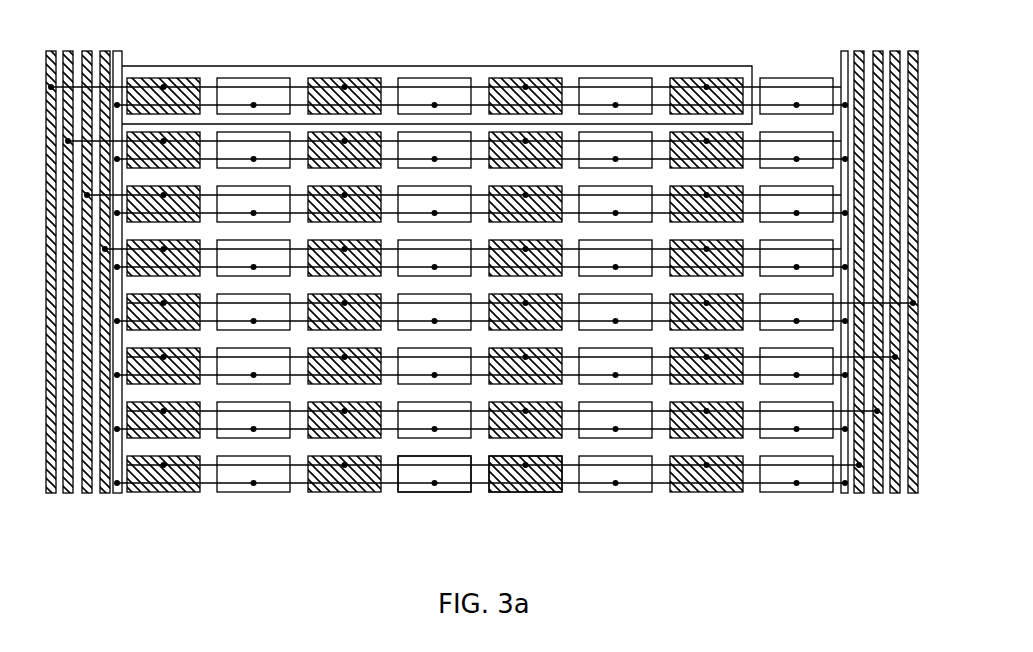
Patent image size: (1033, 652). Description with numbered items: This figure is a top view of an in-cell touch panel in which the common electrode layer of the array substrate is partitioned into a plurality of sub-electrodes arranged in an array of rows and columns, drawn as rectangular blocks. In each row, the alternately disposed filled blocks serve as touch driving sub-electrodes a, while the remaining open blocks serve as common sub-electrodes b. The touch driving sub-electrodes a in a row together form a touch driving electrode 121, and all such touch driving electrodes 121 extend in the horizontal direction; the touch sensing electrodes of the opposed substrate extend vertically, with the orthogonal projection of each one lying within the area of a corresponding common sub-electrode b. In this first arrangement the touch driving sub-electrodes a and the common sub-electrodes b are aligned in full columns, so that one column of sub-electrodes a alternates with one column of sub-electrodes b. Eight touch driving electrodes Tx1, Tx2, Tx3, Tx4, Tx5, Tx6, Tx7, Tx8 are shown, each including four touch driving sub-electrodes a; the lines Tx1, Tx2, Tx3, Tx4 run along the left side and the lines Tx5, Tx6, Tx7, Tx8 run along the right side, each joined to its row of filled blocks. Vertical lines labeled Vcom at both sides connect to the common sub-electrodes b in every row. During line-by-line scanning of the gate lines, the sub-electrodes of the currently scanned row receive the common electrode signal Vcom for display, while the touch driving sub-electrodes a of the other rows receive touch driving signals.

The touch driving electrode 121 is at (342, 66).
The touch driving sub-electrode a is at (537, 493).
The common sub-electrode b is at (422, 493).
The touch driving electrode Tx1 is at (52, 494).
The touch driving electrode Tx2 is at (68, 494).
The touch driving electrode Tx3 is at (87, 494).
The touch driving electrode Tx4 is at (105, 494).
The touch driving electrode Tx5 is at (913, 494).
The touch driving electrode Tx6 is at (895, 494).
The touch driving electrode Tx7 is at (877, 494).
The touch driving electrode Tx8 is at (859, 494).
The common electrode signal Vcom is at (482, 261).